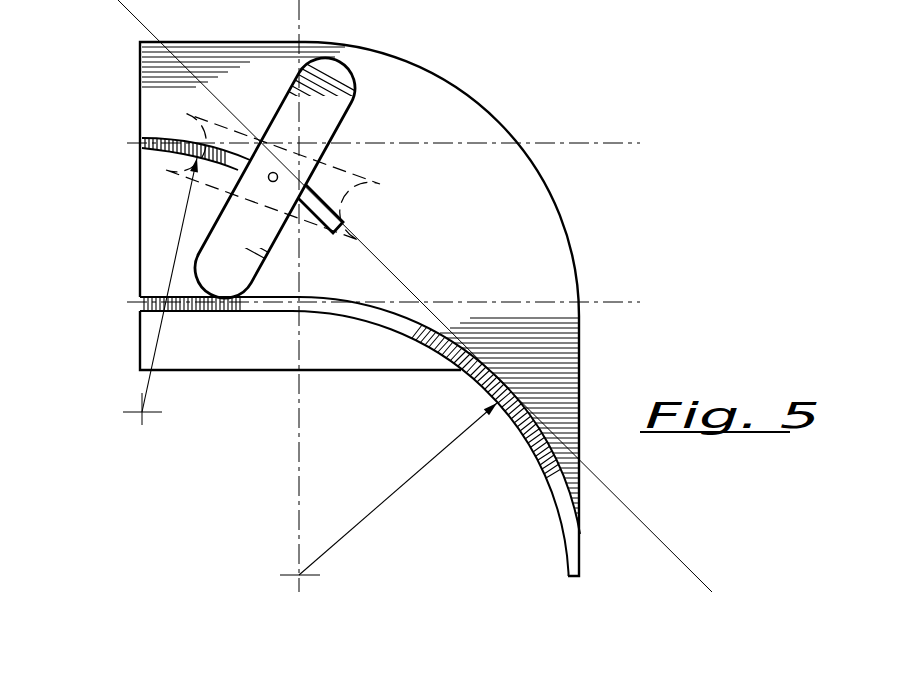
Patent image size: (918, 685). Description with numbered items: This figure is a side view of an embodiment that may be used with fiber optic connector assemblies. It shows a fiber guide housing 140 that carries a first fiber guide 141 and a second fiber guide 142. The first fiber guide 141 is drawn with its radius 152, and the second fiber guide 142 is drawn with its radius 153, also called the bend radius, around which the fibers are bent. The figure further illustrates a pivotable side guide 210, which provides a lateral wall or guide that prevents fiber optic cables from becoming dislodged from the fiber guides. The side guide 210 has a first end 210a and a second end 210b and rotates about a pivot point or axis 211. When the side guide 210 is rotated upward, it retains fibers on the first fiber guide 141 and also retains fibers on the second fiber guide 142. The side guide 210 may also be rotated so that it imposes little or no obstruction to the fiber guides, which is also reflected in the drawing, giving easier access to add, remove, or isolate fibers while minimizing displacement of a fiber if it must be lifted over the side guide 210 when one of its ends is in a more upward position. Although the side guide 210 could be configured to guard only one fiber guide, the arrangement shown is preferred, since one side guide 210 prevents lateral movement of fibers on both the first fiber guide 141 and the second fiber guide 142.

The fiber guide housing 140 is at (492, 231).
The first fiber guide 141 is at (317, 214).
The second fiber guide 142 is at (555, 490).
The radius of first fiber guide 152 is at (156, 337).
The bend radius of second fiber guide 153 is at (398, 485).
The pivotable side guide 210 is at (284, 128).
The first end of side guide 210a is at (333, 80).
The second end of side guide 210b is at (200, 269).
The pivot point or axis 211 is at (268, 178).